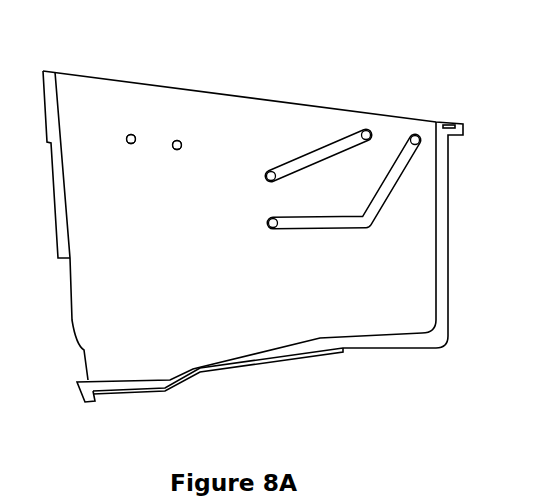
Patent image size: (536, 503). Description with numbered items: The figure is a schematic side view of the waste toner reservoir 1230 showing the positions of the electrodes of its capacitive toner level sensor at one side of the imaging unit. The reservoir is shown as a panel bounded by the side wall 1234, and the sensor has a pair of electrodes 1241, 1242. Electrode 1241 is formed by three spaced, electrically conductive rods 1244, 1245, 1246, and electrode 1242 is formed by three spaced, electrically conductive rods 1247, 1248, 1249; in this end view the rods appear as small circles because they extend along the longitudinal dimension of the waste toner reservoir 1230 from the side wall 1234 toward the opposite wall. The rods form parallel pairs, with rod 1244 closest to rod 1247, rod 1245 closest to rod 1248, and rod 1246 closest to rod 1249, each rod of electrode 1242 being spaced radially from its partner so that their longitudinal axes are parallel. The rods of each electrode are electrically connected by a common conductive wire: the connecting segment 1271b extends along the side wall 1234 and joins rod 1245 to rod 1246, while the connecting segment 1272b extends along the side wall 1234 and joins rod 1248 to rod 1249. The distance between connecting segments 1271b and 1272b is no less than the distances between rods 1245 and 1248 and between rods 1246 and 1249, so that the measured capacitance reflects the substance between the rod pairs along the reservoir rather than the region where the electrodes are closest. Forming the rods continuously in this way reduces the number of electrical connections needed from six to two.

The waste toner reservoir 1230 is at (94, 94).
The side wall 1234 is at (175, 313).
The electrode 1241 is at (135, 134).
The electrode 1242 is at (179, 140).
The rod 1244 is at (135, 143).
The rod 1245 is at (419, 136).
The rod 1246 is at (268, 227).
The rod 1247 is at (181, 149).
The rod 1248 is at (365, 130).
The rod 1249 is at (270, 170).
The connecting segment 1271b is at (348, 229).
The connecting segment 1272b is at (324, 161).